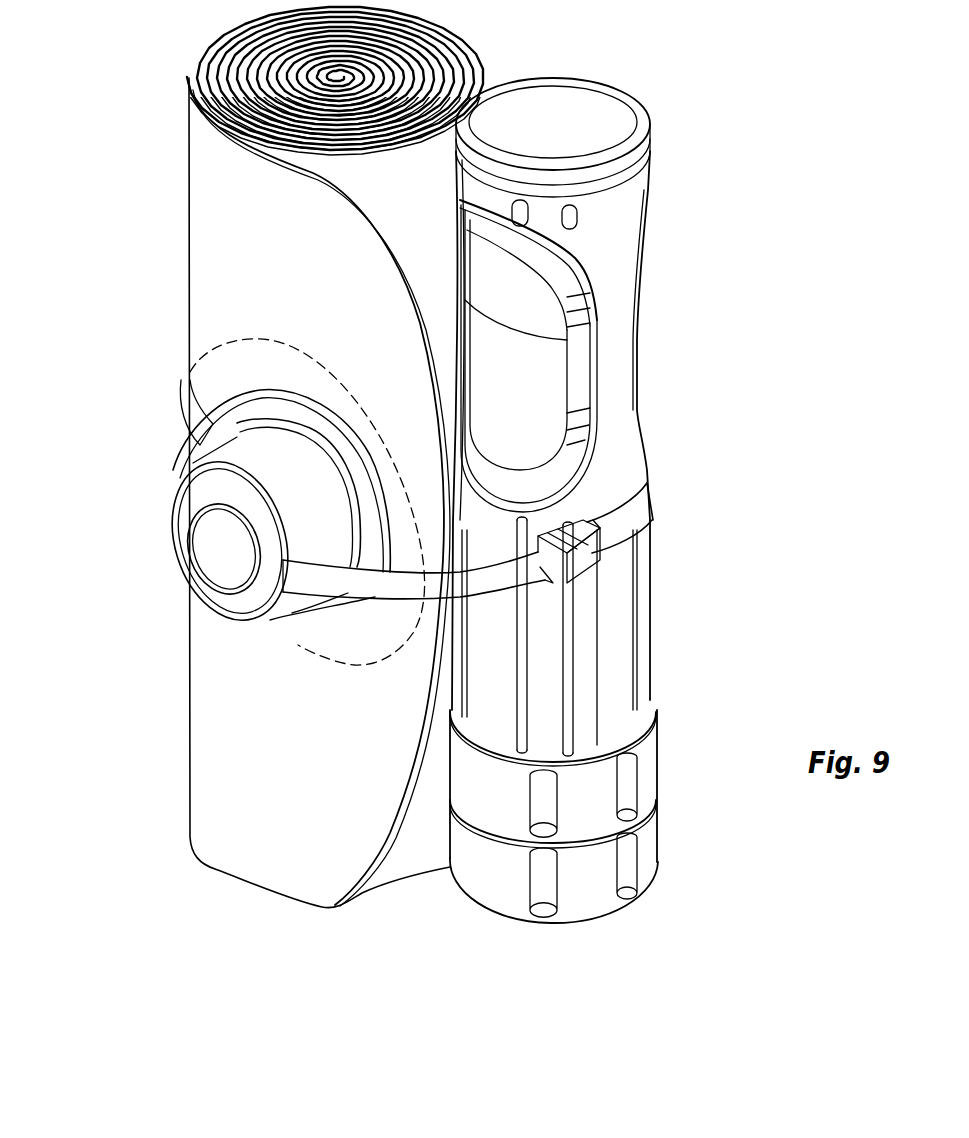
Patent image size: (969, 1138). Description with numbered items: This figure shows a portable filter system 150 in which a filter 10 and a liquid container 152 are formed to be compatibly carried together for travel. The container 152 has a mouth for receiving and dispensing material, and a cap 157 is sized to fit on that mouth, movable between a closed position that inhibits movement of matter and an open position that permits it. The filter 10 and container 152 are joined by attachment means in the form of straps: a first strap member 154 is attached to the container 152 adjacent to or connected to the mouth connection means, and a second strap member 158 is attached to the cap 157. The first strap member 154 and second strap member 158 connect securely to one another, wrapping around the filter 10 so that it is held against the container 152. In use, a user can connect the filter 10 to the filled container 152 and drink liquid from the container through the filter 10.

The filter 10 is at (640, 322).
The portable filter system 150 is at (773, 567).
The liquid container 152 is at (213, 263).
The first strap member 154 is at (647, 510).
The cap 157 is at (293, 503).
The second strap member 158 is at (365, 582).